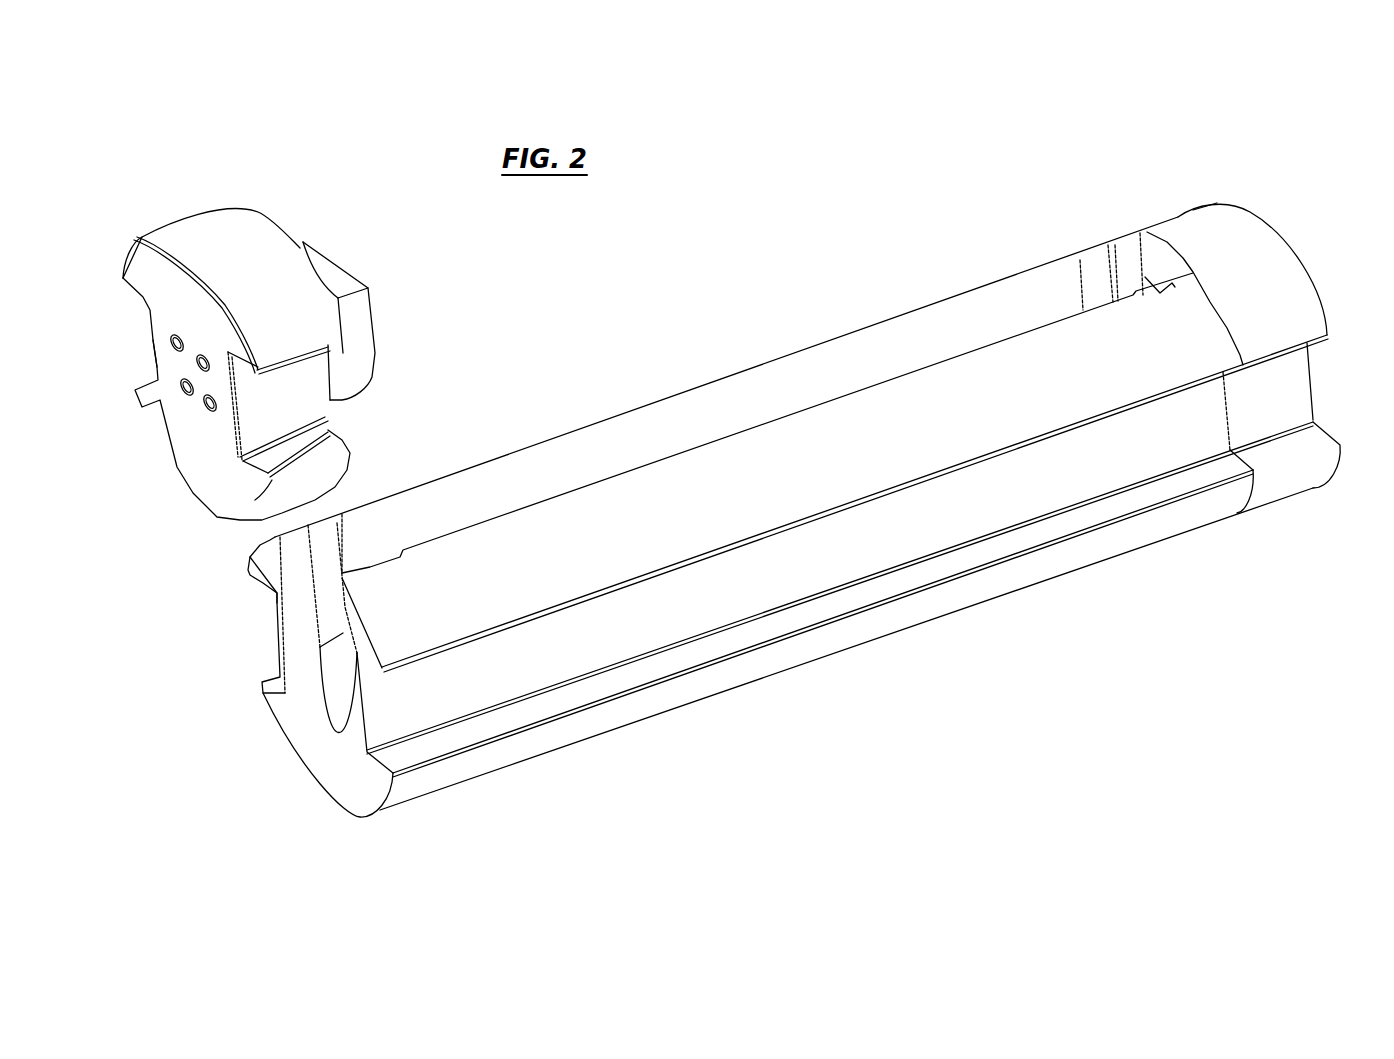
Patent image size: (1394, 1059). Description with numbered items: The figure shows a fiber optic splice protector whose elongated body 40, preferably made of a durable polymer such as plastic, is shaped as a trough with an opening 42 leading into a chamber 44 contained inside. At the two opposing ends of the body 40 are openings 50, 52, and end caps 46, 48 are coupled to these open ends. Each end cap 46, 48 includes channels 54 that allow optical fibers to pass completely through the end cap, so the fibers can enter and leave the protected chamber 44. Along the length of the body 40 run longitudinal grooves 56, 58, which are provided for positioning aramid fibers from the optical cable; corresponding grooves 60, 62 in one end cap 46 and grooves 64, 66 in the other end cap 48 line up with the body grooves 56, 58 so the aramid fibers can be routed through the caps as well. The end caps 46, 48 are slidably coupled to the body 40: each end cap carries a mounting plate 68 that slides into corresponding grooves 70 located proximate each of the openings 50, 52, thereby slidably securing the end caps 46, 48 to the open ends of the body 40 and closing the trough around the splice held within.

The body 40 is at (628, 392).
The opening 42 is at (793, 364).
The chamber 44 is at (936, 333).
The end cap 46 is at (230, 238).
The end cap 48 is at (1265, 280).
The opening 50 is at (327, 684).
The opening 52 is at (1154, 263).
The channels 54 is at (183, 390).
The groove 56 is at (873, 537).
The groove 58 is at (275, 630).
The groove 60 is at (300, 380).
The groove 62 is at (172, 307).
The groove 64 is at (1265, 392).
The groove 66 is at (1257, 206).
The mounting plate 68 is at (360, 315).
The grooves 70 is at (323, 535).